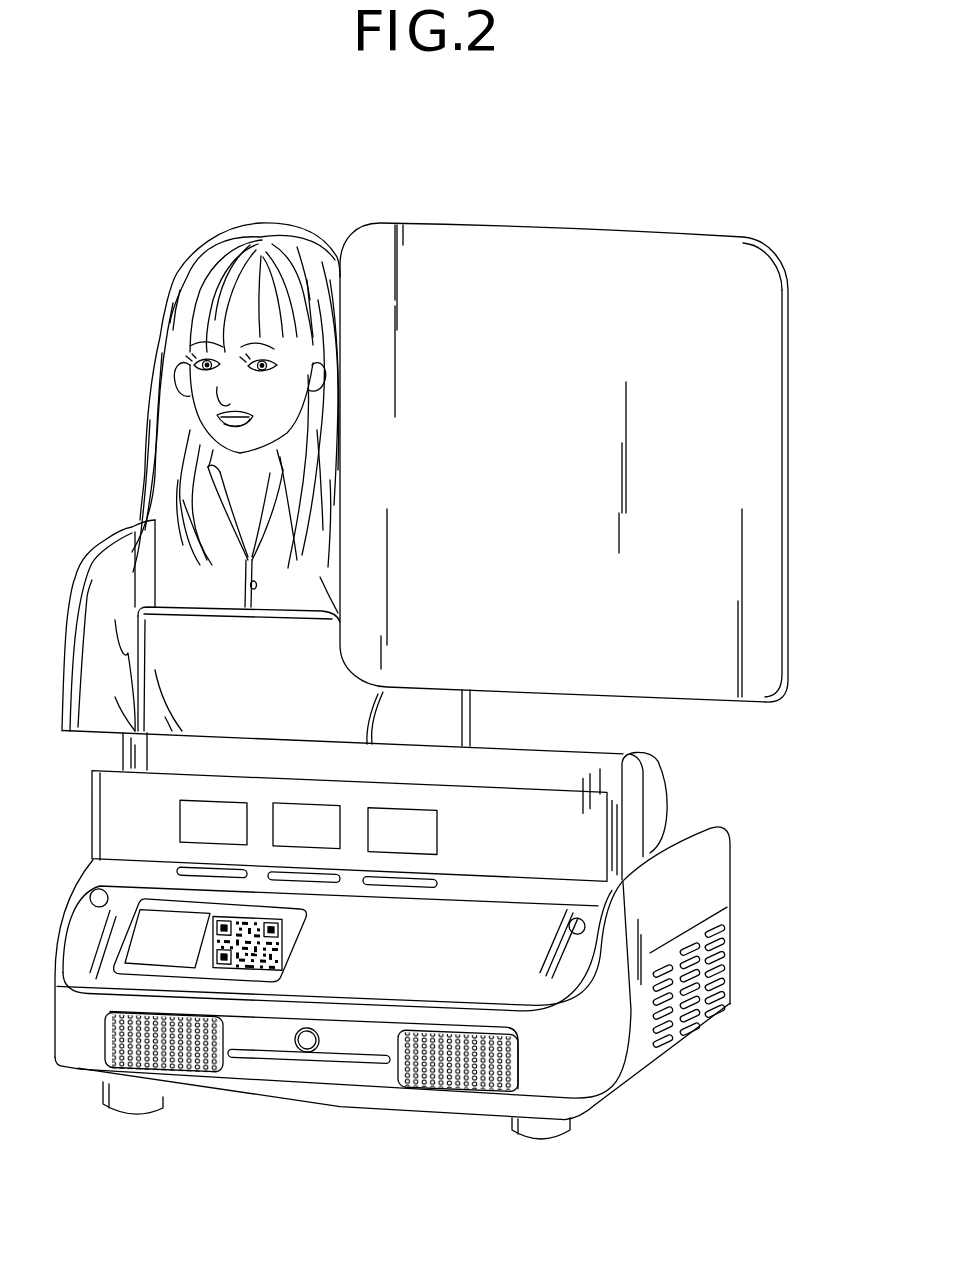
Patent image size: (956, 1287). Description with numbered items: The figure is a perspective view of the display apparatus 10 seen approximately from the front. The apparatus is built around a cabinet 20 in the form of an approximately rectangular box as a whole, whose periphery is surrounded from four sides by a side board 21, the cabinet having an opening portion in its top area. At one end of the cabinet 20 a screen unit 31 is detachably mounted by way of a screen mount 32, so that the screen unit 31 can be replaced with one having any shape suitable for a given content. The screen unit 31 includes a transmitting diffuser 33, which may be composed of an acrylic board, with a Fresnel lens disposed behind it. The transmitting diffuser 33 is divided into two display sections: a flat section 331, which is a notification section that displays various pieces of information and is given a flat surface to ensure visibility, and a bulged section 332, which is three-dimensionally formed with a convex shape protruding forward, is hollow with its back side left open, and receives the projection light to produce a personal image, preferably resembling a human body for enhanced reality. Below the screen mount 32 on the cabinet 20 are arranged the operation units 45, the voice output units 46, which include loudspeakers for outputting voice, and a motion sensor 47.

The display apparatus 10 is at (772, 748).
The cabinet 20 is at (737, 960).
The side board 21 is at (713, 887).
The screen unit 31 is at (582, 221).
The screen mount 32 is at (640, 777).
The transmitting diffuser 33 is at (367, 164).
The flat section 331 is at (378, 226).
The bulged section 332 is at (217, 237).
The operation units 45 is at (214, 798).
The voice output units 46 is at (193, 1067).
The motion sensor 47 is at (323, 1030).